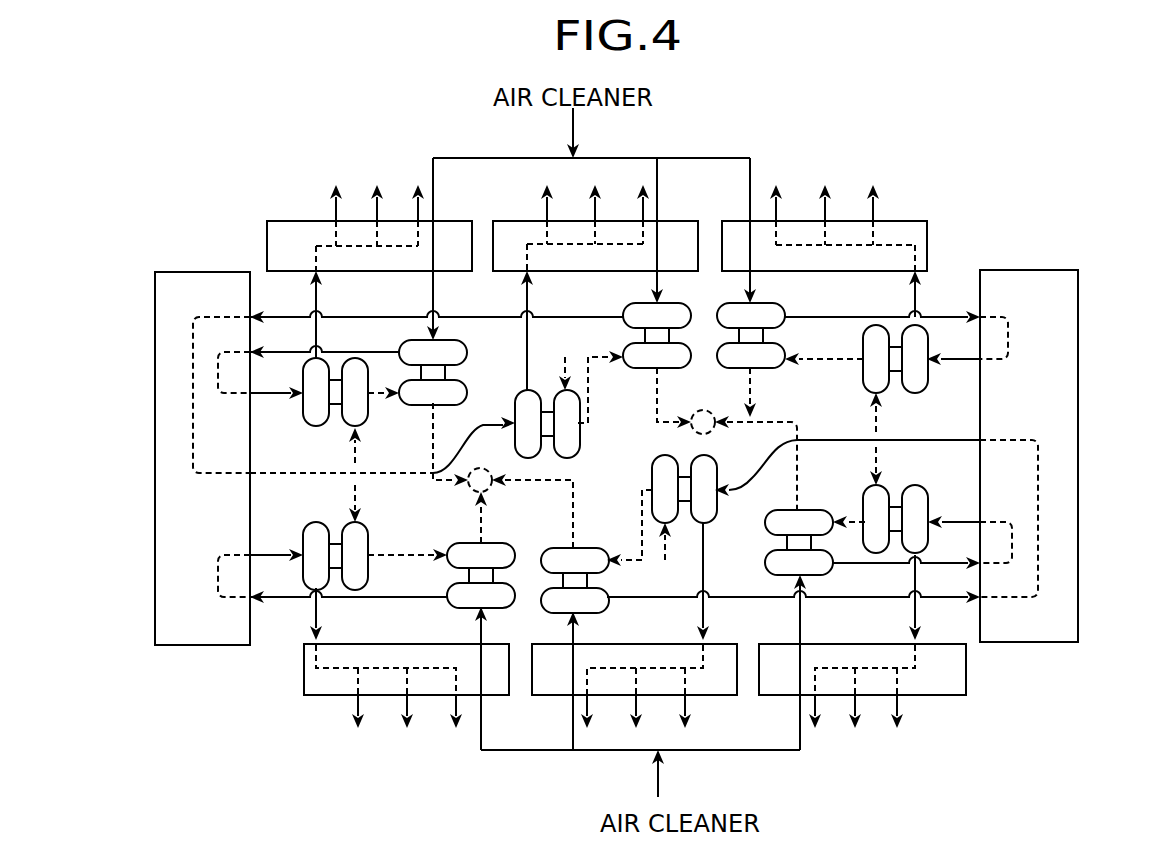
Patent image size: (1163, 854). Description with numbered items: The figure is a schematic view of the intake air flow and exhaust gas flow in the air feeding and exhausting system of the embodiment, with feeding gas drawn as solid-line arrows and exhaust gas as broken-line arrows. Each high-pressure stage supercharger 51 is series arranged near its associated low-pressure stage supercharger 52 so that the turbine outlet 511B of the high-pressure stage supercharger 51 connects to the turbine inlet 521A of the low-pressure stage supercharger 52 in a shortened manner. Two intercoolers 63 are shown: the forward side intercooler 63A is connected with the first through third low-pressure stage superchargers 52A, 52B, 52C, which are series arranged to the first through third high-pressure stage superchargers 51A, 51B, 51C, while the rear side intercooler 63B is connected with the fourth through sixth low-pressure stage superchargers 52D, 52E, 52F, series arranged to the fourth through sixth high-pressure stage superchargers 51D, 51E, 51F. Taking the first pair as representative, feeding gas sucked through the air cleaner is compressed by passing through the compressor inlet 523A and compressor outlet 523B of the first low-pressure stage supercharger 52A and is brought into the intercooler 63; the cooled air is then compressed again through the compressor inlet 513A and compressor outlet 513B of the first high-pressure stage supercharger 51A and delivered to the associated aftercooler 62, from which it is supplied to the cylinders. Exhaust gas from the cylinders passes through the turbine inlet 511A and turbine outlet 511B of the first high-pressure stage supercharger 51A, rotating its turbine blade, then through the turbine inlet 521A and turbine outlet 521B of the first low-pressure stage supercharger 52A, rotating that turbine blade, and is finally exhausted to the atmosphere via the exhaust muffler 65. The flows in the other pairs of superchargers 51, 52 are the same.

The high-pressure stage supercharger 51 is at (570, 387).
The first high-pressure stage supercharger 51A is at (310, 604).
The second high-pressure stage supercharger 51B is at (308, 410).
The third high-pressure stage supercharger 51C is at (528, 392).
The fourth high-pressure stage supercharger 51D is at (918, 347).
The fifth high-pressure stage supercharger 51E is at (922, 500).
The sixth high-pressure stage supercharger 51F is at (702, 513).
The turbine inlet 511A is at (363, 520).
The turbine outlet 511B is at (368, 550).
The compressor inlet 513A is at (300, 548).
The compressor outlet 513B is at (316, 590).
The low-pressure stage supercharger 52 is at (669, 226).
The first low-pressure stage supercharger 52A is at (467, 654).
The second low-pressure stage supercharger 52B is at (413, 347).
The third low-pressure stage supercharger 52C is at (672, 310).
The fourth low-pressure stage supercharger 52D is at (773, 315).
The fifth low-pressure stage supercharger 52E is at (815, 567).
The sixth low-pressure stage supercharger 52F is at (595, 612).
The turbine inlet 521A is at (450, 552).
The turbine outlet 521B is at (497, 545).
The compressor inlet 523A is at (488, 608).
The compressor outlet 523B is at (451, 594).
The aftercooler 62 is at (470, 221).
The intercooler 63 is at (659, 413).
The forward side intercooler 63A is at (212, 272).
The rear side intercooler 63B is at (1078, 350).
The exhaust muffler 65 is at (481, 468).